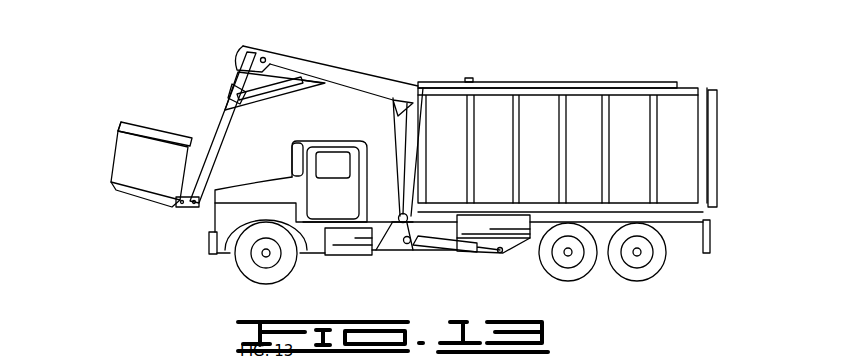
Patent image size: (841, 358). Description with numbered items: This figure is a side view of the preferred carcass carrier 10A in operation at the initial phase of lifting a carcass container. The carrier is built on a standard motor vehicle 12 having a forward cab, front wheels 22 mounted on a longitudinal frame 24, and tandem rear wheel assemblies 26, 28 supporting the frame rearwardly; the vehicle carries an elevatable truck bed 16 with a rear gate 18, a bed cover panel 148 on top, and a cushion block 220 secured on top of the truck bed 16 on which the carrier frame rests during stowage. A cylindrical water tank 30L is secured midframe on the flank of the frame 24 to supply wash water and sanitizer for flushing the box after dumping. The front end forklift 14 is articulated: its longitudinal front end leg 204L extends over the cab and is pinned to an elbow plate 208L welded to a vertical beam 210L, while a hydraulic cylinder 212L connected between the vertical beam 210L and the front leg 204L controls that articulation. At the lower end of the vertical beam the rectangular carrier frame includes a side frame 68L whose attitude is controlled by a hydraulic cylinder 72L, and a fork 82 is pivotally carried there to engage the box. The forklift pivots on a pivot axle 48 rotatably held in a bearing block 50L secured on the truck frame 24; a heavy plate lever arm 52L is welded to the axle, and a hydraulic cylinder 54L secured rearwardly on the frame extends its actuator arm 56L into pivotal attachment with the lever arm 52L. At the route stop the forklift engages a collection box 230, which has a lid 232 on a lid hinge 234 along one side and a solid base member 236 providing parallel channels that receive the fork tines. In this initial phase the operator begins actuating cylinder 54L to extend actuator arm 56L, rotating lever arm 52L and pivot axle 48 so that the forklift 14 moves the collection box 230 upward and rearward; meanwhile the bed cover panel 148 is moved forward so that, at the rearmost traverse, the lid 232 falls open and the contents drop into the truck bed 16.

The carcass carrier 10A is at (533, 36).
The motor vehicle 12 is at (303, 141).
The front end forklift 14 is at (327, 66).
The truck bed 16 is at (680, 104).
The rear gate 18 is at (718, 129).
The front wheels 22 is at (247, 277).
The longitudinal frame 24 is at (390, 247).
The tandem rear wheel assembly 26 is at (584, 276).
The tandem rear wheel assembly 28 is at (661, 271).
The water tank 30L is at (514, 246).
The pivot axle 48 is at (397, 226).
The bearing block 50L is at (401, 214).
The lever arm 52L is at (405, 245).
The hydraulic cylinder 54L is at (470, 252).
The actuator arm 56L is at (415, 244).
The side frame 68L is at (214, 159).
The hydraulic cylinder 72L is at (205, 132).
The fork 82 is at (180, 207).
The bed cover panel 148 is at (592, 83).
The longitudinal front end leg 204L is at (377, 87).
The elbow plate 208L is at (246, 56).
The vertical beam 210L is at (213, 128).
The hydraulic cylinder 212L is at (290, 97).
The cushion block 220 is at (475, 82).
The collection box 230 is at (122, 163).
The lid 232 is at (157, 132).
The lid hinge 234 is at (117, 128).
The base member 236 is at (133, 195).